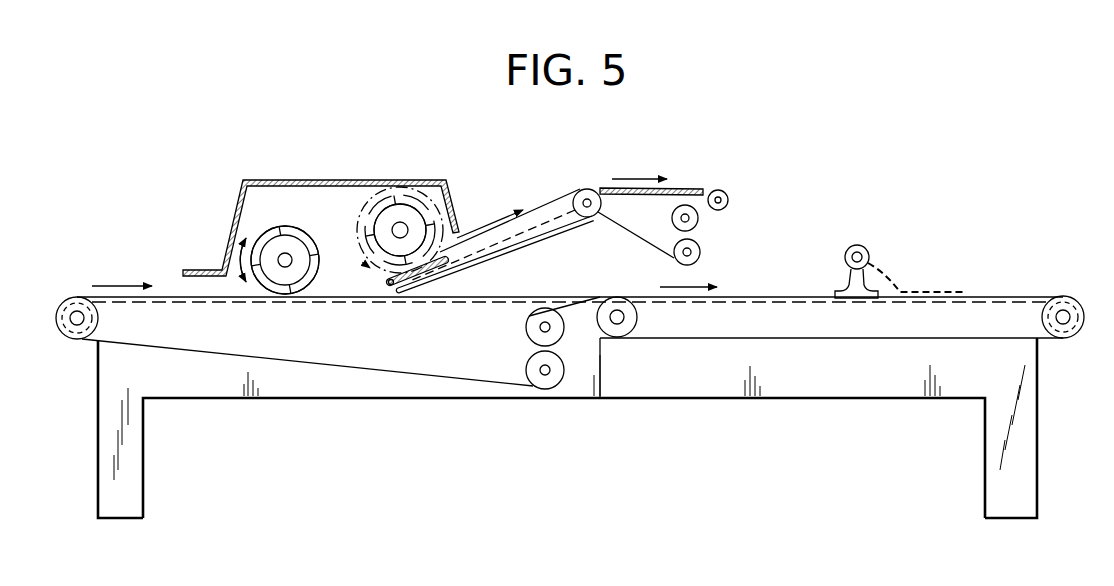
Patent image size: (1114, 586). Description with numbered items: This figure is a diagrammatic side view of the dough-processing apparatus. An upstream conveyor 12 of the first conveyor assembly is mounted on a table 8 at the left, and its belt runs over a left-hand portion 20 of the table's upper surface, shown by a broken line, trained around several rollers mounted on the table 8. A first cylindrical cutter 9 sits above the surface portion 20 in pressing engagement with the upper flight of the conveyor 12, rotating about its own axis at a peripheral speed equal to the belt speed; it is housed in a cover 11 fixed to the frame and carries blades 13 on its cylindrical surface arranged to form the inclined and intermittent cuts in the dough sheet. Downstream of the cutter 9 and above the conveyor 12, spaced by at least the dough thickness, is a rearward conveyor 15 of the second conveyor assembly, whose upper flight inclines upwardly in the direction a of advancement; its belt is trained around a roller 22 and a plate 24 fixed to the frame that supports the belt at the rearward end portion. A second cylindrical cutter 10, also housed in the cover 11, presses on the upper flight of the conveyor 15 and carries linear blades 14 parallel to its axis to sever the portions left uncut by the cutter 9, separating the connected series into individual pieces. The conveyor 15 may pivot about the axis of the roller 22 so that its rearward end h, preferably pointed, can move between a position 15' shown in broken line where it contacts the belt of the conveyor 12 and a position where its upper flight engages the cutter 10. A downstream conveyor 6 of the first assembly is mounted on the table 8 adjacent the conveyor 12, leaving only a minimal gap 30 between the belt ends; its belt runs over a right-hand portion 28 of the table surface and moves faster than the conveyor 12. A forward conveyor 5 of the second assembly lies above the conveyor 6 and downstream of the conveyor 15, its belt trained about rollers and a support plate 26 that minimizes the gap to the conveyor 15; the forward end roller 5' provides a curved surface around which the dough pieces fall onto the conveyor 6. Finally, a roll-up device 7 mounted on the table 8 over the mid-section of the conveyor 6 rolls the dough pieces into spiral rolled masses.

The forward conveyor 5 is at (651, 160).
The forward end roller 5' is at (746, 203).
The downstream conveyor 6 is at (798, 283).
The roll-up device 7 is at (884, 258).
The table 8 is at (197, 383).
The first cylindrical cutter 9 is at (277, 248).
The second cylindrical cutter 10 is at (412, 217).
The cover 11 is at (266, 180).
The upstream conveyor 12 is at (128, 347).
The blades 13 is at (280, 232).
The linear blades 14 is at (395, 204).
The rearward conveyor 15 is at (495, 204).
The broken-line position of rearward conveyor 15' is at (494, 254).
The left-hand portion of upper surface 20 is at (167, 300).
The roller 22 is at (587, 189).
The plate 24 is at (412, 286).
The support plate 26 is at (653, 195).
The right-hand portion of upper surface 28 is at (697, 305).
The gap 30 is at (603, 298).
The direction of advancement a is at (122, 273).
The rearward end h is at (386, 282).